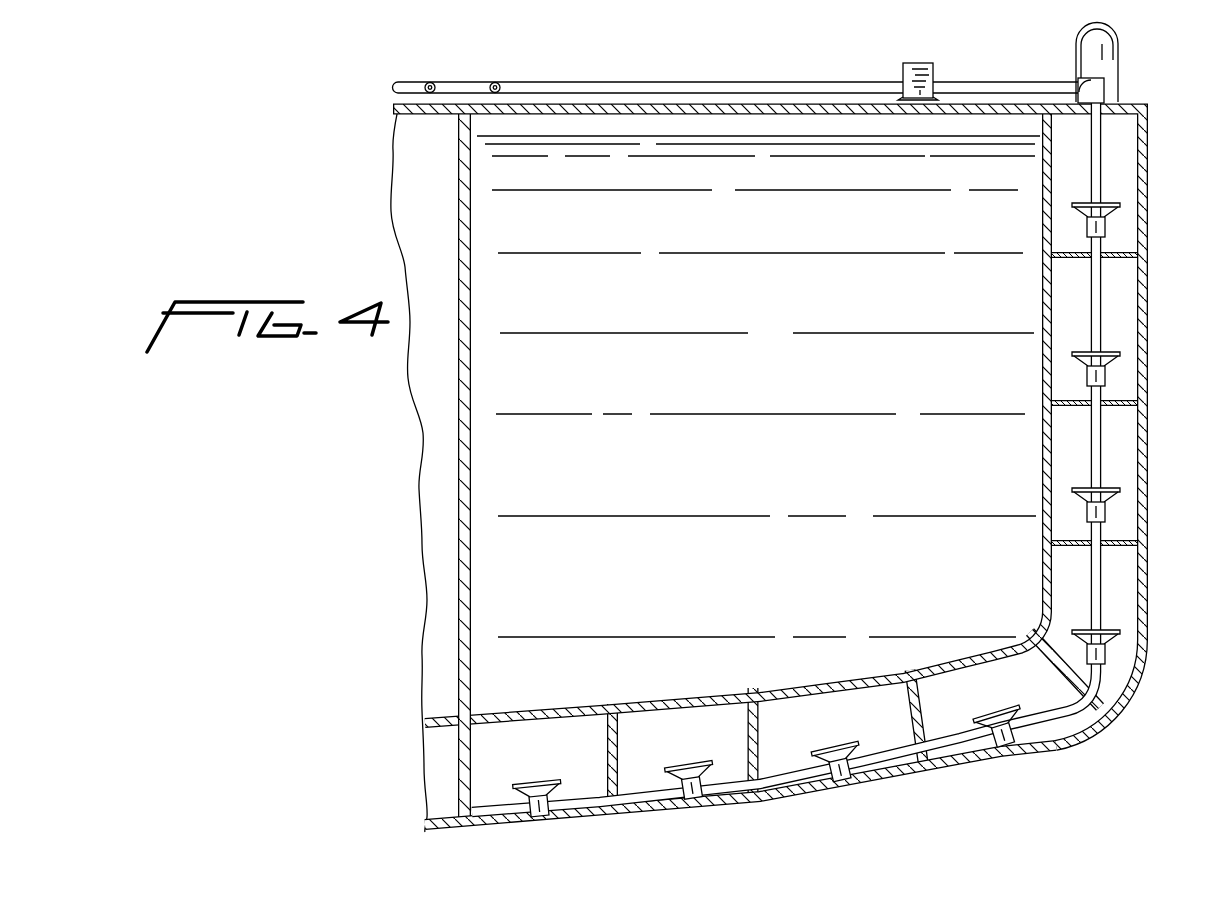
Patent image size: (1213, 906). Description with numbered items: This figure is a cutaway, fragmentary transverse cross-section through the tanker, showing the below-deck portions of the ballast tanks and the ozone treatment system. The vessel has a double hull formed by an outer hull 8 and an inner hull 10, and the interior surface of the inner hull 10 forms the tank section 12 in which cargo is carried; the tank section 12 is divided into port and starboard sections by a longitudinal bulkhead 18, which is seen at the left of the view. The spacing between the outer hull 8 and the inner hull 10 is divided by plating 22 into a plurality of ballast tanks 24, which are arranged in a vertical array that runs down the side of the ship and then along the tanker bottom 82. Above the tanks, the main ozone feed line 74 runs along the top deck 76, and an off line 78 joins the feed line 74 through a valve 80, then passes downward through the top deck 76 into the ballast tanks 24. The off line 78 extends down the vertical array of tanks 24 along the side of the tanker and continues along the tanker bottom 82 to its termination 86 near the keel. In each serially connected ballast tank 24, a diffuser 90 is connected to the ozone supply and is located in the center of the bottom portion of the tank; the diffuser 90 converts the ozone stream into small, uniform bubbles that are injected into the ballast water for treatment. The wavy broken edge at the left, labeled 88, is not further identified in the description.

The outer hull 8 is at (1147, 233).
The inner hull 10 is at (1043, 438).
The tank section 12 is at (604, 175).
The longitudinal bulkhead 18 is at (473, 487).
The plating 22 is at (1123, 258).
The ballast tanks 24 is at (1063, 273).
The main ozone feed line 74 is at (497, 80).
The top deck 76 is at (962, 137).
The off line 78 is at (1047, 78).
The valve 80 is at (922, 63).
The tanker bottom 82 is at (800, 800).
The termination of the off line 86 is at (493, 828).
The outer wall break 88 is at (432, 830).
The diffuser 90 is at (1103, 205).